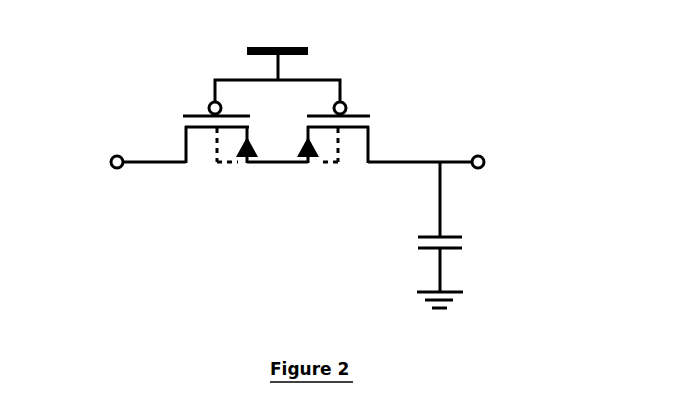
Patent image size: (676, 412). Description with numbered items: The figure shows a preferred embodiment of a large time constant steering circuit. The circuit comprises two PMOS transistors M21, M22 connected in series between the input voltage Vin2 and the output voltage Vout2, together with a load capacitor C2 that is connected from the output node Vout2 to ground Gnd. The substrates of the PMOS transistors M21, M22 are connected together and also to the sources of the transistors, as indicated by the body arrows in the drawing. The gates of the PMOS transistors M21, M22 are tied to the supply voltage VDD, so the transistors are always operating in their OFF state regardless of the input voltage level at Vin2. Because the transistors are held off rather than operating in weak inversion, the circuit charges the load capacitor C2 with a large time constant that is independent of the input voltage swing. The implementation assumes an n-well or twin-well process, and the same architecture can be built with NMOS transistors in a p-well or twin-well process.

The supply voltage VDD is at (276, 47).
The input voltage Vin2 is at (112, 158).
The PMOS transistor M21 is at (220, 160).
The PMOS transistor M22 is at (333, 160).
The output voltage Vout2 is at (476, 160).
The load capacitor C2 is at (461, 227).
The ground Gnd is at (438, 317).